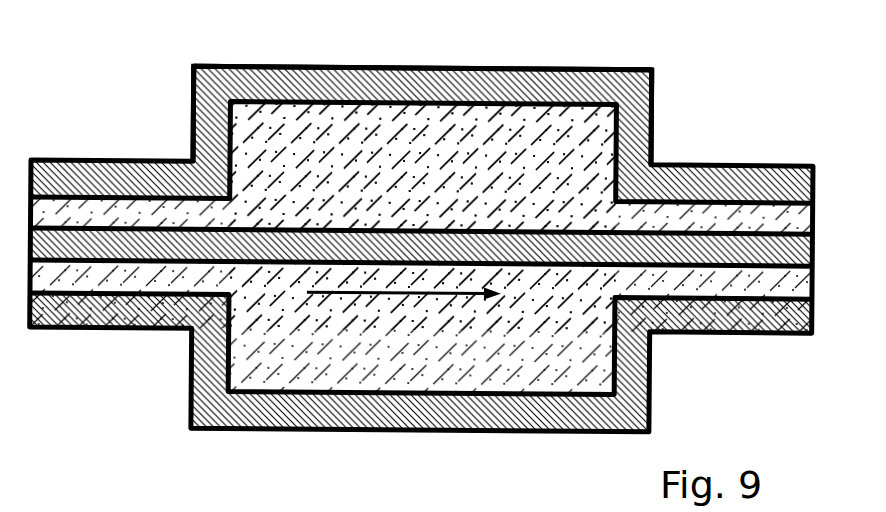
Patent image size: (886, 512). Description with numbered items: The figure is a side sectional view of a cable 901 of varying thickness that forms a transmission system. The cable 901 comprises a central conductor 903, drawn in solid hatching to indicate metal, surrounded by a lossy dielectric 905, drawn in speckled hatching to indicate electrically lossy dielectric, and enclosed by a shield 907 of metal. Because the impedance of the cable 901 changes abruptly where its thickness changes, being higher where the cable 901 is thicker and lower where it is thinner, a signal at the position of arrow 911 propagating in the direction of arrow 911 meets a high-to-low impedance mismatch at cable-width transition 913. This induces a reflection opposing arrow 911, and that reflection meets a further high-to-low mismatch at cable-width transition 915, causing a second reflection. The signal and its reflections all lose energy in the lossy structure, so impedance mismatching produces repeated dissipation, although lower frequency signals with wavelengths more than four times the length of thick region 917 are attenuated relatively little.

The cable 901 is at (160, 92).
The conductor 903 is at (372, 258).
The lossy dielectric 905 is at (417, 198).
The shield 907 is at (417, 96).
The arrow 911 is at (415, 293).
The cable-width transition 913 is at (631, 56).
The cable-width transition 915 is at (212, 52).
The thick region 917 is at (392, 54).